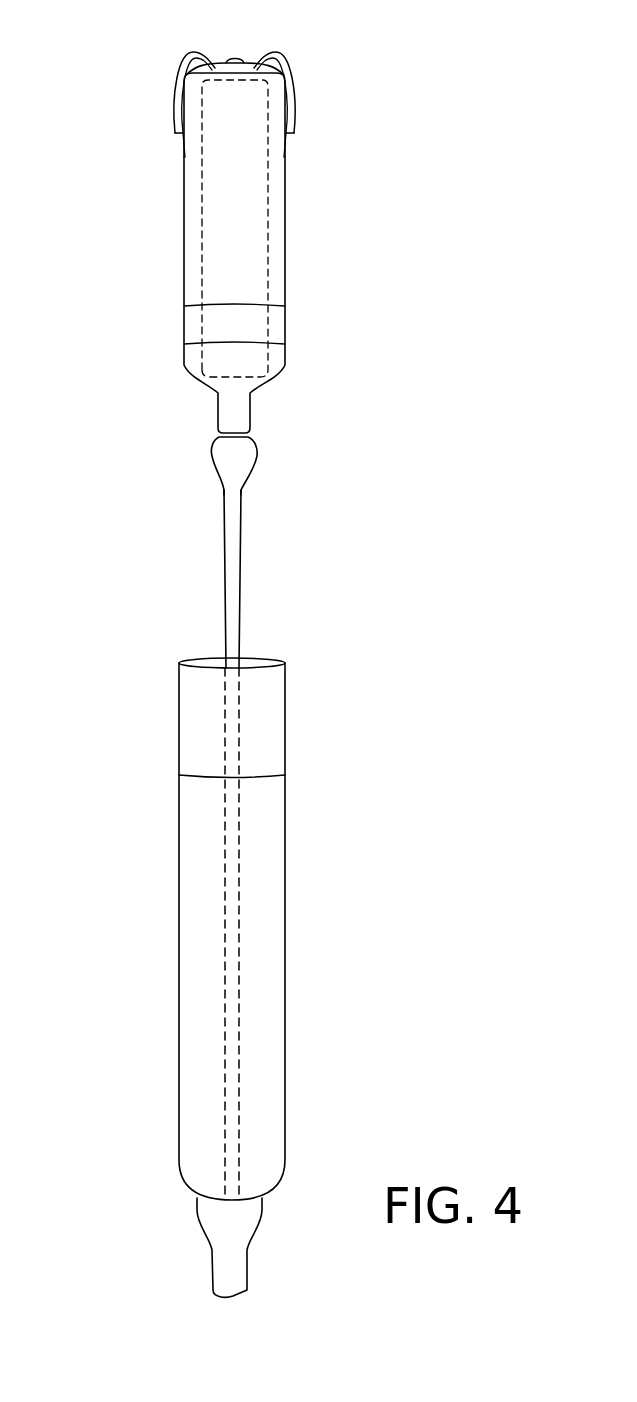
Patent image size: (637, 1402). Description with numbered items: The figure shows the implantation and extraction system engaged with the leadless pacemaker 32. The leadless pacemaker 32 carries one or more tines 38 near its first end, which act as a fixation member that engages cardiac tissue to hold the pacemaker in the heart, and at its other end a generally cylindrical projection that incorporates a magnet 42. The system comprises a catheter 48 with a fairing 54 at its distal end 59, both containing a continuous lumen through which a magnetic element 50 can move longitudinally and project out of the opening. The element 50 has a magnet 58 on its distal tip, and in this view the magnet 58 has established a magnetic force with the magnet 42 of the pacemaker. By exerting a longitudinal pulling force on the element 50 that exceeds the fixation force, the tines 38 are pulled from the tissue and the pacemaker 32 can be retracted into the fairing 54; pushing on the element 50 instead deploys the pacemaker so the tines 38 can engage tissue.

The leadless pacemaker 32 is at (287, 225).
The tines 38 is at (172, 72).
The magnet 42 is at (238, 413).
The catheter 48 is at (121, 905).
The magnetic element 50 is at (223, 600).
The fairing 54 is at (285, 805).
The magnet 58 is at (212, 455).
The distal end 59 is at (238, 977).